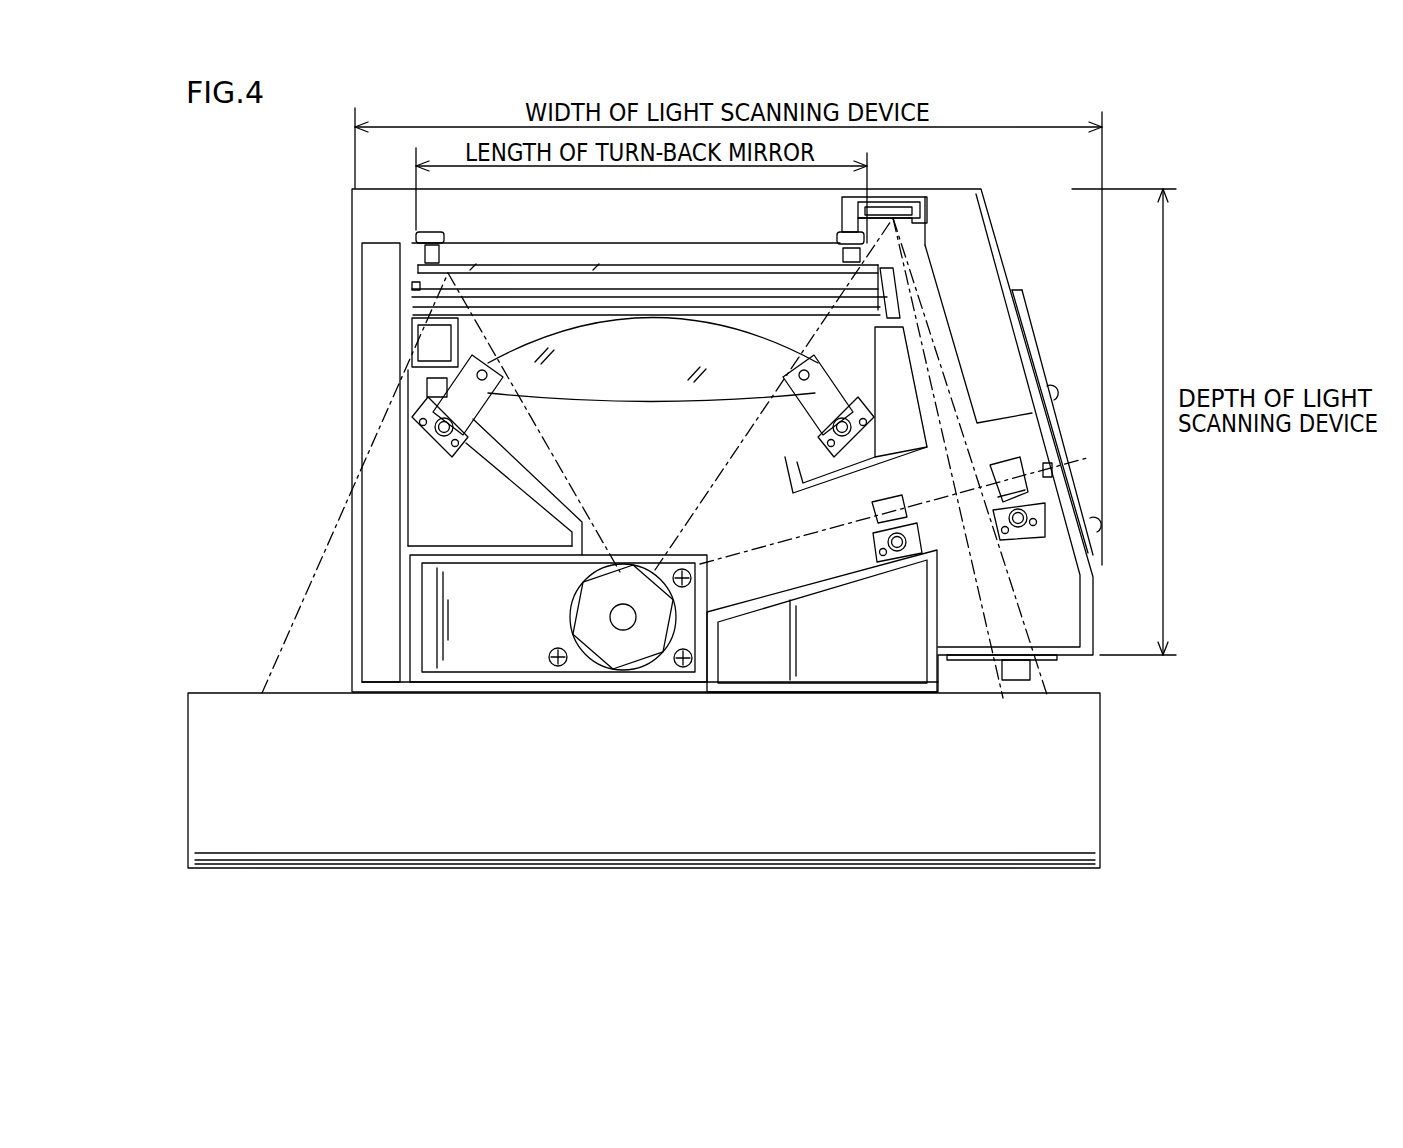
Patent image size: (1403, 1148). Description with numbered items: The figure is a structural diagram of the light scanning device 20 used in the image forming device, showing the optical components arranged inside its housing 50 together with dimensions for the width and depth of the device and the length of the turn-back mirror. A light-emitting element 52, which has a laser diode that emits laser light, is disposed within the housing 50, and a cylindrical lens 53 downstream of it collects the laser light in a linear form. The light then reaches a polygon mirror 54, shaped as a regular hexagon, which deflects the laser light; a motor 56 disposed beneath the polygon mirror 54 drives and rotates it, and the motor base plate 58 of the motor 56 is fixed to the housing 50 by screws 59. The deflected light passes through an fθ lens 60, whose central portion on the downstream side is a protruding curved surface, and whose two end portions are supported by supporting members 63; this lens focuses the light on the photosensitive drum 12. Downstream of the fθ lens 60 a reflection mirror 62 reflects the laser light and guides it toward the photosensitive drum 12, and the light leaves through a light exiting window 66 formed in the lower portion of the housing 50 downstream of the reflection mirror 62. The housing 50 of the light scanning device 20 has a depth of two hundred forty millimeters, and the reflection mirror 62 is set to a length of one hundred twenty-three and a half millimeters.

The photosensitive drum 12 is at (1043, 869).
The light scanning device 20 is at (333, 347).
The housing 50 is at (352, 440).
The light-emitting element 52 is at (1056, 470).
The cylindrical lens 53 is at (875, 512).
The polygon mirror 54 is at (582, 598).
The motor 56 is at (648, 665).
The motor base plate 58 is at (582, 665).
The screws 59 is at (553, 668).
The fθ lens 60 is at (652, 393).
The reflection mirror 62 is at (778, 264).
The supporting members 63 is at (441, 443).
The light exiting window 66 is at (565, 312).